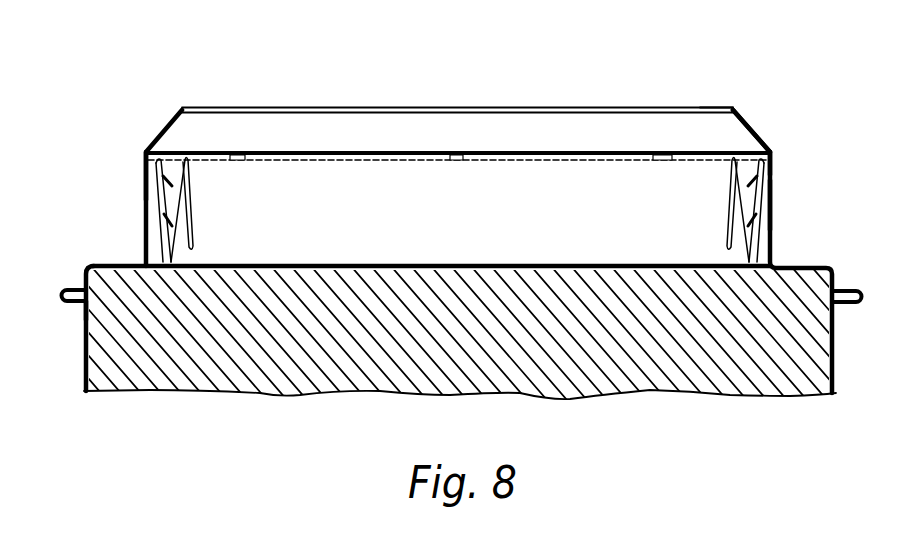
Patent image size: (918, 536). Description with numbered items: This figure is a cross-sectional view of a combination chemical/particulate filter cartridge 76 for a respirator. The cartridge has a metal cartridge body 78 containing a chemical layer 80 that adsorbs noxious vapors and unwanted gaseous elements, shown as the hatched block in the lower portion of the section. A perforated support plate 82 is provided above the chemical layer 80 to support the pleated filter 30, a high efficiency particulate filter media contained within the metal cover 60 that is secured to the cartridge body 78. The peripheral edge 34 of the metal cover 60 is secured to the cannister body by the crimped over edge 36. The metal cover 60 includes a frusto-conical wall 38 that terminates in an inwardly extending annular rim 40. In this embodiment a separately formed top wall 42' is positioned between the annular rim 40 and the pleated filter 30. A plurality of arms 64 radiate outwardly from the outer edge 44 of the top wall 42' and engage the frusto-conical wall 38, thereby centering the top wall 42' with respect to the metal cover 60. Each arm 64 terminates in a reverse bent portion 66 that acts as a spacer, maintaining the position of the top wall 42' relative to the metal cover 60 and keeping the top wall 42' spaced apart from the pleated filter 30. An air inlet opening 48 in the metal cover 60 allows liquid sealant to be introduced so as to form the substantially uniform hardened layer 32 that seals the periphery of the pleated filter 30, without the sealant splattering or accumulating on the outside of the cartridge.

The pleated filter 30 is at (193, 232).
The hardened layer 32 is at (145, 165).
The peripheral edge 34 is at (66, 289).
The crimped over edge 36 is at (66, 303).
The frusto-conical wall 38 is at (752, 130).
The annular rim 40 is at (725, 107).
The top wall 42' is at (457, 113).
The outer edge of the top wall 44 is at (222, 153).
The air inlet opening 48 is at (213, 141).
The metal cover 60 is at (743, 102).
The arms 64 is at (703, 157).
The reverse bent portions 66 is at (268, 156).
The combination chemical/particulate filter cartridge 76 is at (190, 94).
The metal cartridge body 78 is at (83, 368).
The chemical layer 80 is at (262, 383).
The perforated support plate 82 is at (484, 265).